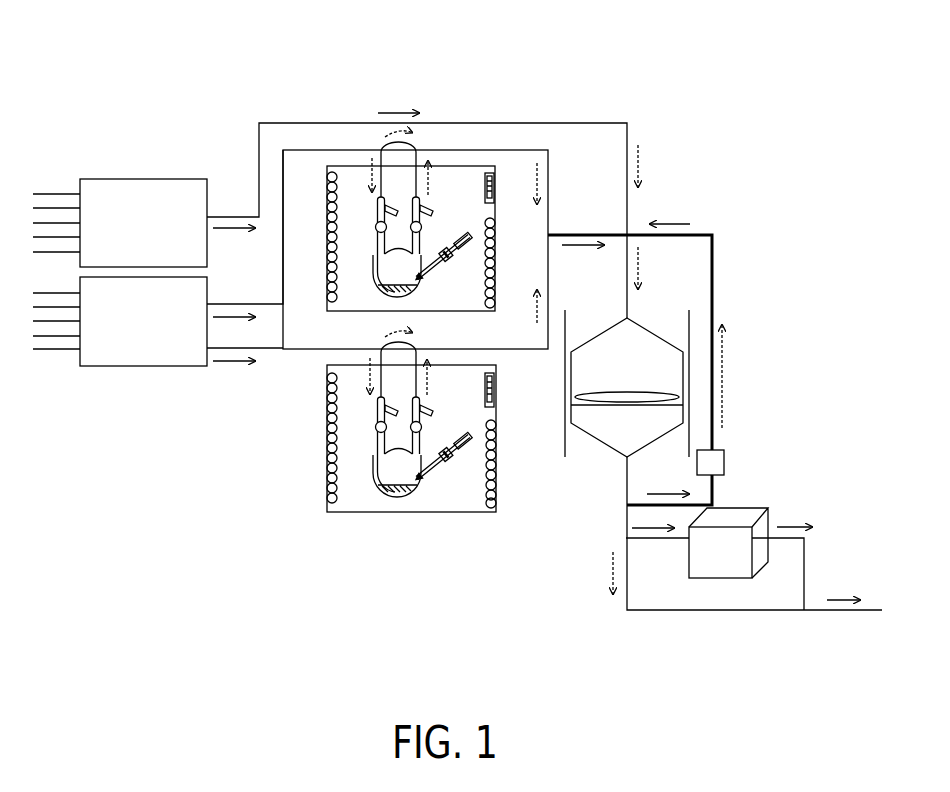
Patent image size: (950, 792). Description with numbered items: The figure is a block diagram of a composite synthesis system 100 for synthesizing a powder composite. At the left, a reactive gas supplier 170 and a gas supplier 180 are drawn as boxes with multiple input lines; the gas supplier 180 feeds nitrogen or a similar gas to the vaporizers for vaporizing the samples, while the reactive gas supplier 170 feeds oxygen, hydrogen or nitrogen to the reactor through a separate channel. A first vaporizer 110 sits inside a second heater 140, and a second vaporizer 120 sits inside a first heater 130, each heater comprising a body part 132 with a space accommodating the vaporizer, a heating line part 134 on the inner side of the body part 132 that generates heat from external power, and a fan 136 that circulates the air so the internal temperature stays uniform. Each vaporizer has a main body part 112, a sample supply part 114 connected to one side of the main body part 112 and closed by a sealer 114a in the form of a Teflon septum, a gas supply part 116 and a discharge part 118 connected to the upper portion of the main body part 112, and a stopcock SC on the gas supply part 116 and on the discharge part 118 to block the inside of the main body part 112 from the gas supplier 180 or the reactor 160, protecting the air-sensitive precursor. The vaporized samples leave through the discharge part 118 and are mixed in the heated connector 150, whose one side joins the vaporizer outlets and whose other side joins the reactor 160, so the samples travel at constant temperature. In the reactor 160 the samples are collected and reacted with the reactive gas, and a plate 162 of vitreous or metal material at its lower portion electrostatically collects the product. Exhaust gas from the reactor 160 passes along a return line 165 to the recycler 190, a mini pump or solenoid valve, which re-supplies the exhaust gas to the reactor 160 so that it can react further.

The composite synthesis system 100 is at (608, 96).
The first vaporizer 110 is at (410, 241).
The main body part 112 is at (373, 268).
The sample supply part 114 is at (423, 262).
The sealer 114a is at (444, 261).
The gas supply part 116 is at (377, 215).
The discharge part 118 is at (414, 201).
The stopcock SC is at (424, 212).
The second vaporizer 120 is at (376, 490).
The first heater 130 is at (390, 453).
The body part 132 is at (438, 513).
The heating line part 134 is at (497, 483).
The fan 136 is at (497, 385).
The second heater 140 is at (346, 163).
The connector 150 is at (548, 180).
The reactor 160 is at (723, 460).
The plate 162 is at (608, 392).
The recirculation line 165 is at (689, 320).
The reactive gas supplier 170 is at (140, 178).
The gas supplier 180 is at (143, 367).
The recycler 190 is at (725, 462).